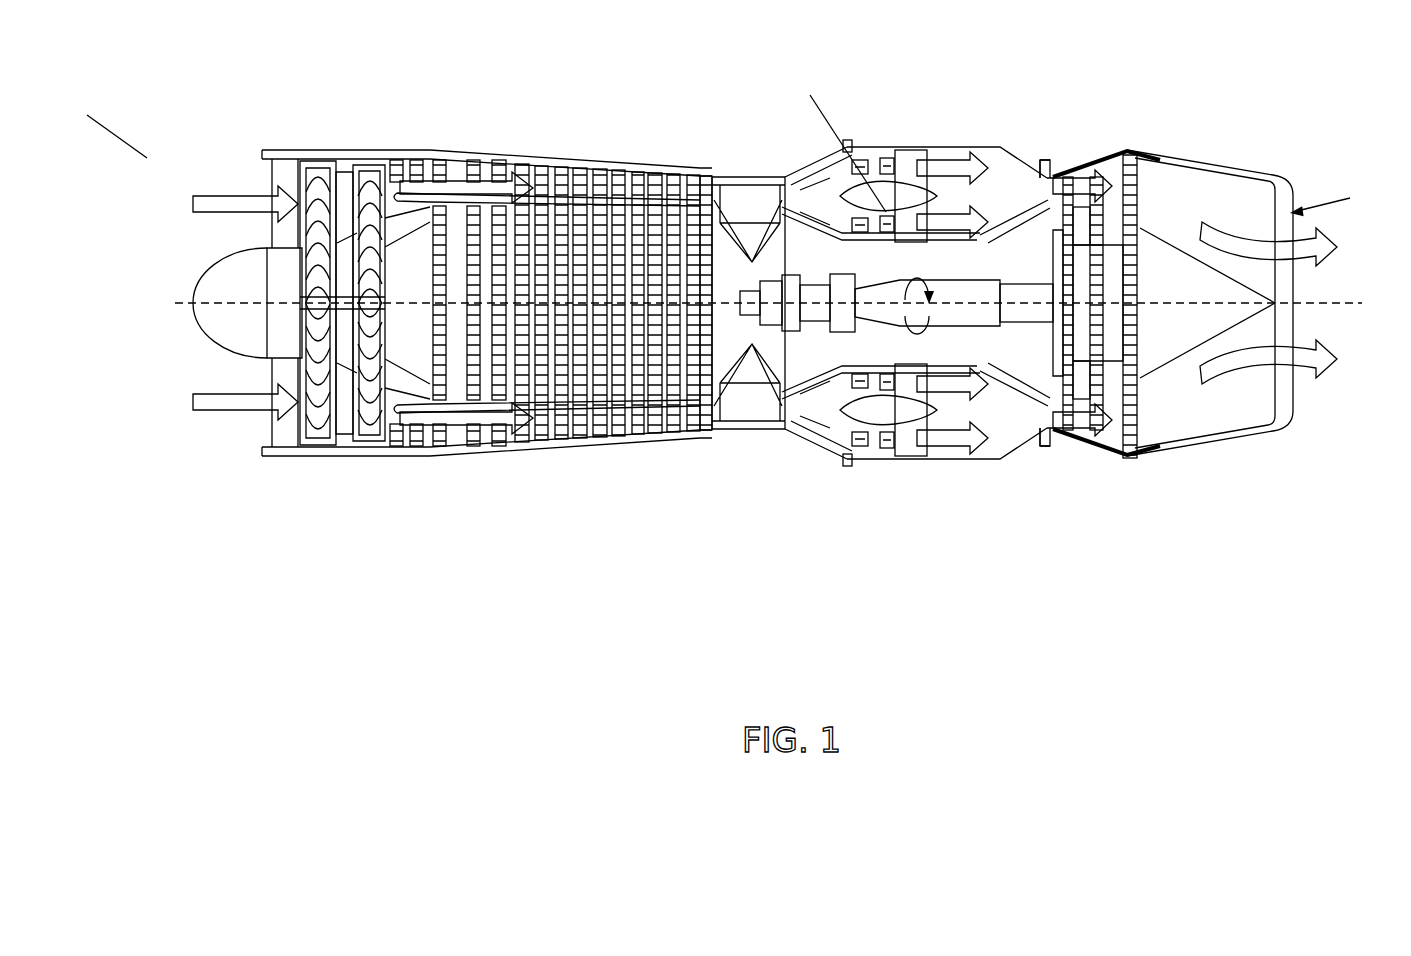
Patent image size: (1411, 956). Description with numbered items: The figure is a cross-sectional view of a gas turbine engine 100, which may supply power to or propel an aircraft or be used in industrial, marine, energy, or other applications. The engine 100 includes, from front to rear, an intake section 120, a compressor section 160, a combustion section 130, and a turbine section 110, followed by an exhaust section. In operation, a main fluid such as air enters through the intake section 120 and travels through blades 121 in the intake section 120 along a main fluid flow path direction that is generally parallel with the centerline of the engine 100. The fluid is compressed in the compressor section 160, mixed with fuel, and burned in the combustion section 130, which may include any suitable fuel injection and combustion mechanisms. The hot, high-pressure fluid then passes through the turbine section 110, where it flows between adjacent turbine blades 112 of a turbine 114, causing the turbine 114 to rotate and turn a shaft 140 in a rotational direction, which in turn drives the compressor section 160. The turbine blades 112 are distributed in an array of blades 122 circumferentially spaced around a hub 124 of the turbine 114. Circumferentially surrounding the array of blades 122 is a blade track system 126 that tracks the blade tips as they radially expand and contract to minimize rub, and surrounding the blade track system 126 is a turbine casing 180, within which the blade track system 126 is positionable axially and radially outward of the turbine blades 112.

The gas turbine engine 100 is at (717, 346).
The turbine section 110 is at (1104, 279).
The turbine blades 112 is at (1140, 270).
The turbine 114 is at (1168, 320).
The intake section 120 is at (250, 435).
The blades 121 is at (346, 160).
The array of blades 122 is at (1100, 468).
The hub 124 is at (1140, 232).
The blade track system 126 is at (1103, 150).
The combustion section 130 is at (997, 165).
The shaft 140 is at (963, 305).
The compressor section 160 is at (562, 136).
The turbine casing 180 is at (1176, 155).